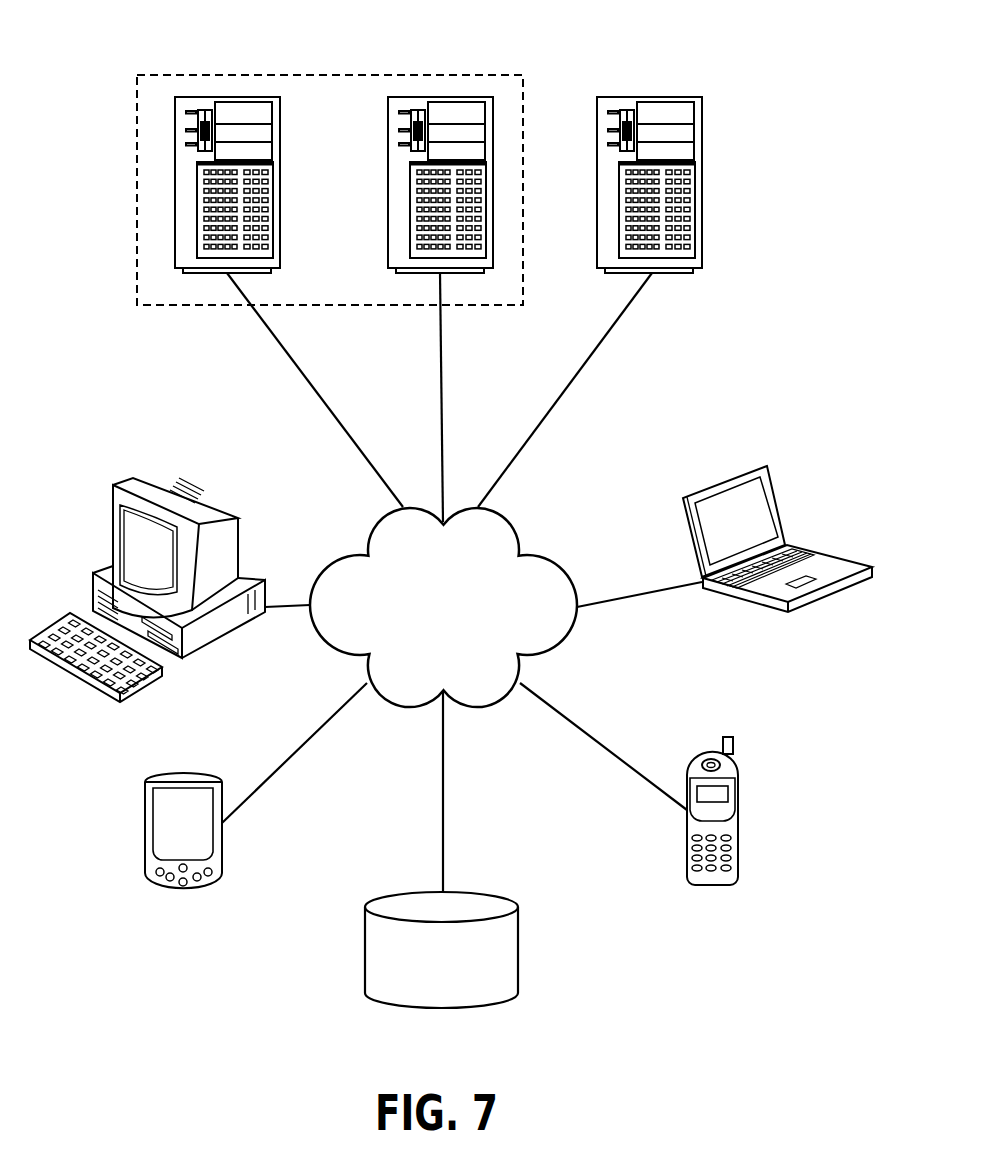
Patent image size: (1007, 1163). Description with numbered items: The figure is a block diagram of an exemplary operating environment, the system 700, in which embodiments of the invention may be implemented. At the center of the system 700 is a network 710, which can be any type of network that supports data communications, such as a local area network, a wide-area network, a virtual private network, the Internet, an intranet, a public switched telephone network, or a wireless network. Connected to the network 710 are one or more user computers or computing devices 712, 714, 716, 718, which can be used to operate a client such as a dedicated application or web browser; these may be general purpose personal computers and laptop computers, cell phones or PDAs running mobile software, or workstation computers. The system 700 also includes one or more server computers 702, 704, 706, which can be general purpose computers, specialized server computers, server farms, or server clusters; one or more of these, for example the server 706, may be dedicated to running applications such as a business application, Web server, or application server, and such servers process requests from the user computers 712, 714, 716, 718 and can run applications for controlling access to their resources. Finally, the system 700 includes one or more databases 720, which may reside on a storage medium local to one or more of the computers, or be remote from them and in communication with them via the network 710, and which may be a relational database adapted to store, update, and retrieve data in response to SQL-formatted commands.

The system 700 is at (786, 116).
The server computer 702 is at (210, 97).
The server computer 704 is at (453, 97).
The server computer 706 is at (702, 180).
The network 710 is at (467, 636).
The user computer 712 is at (160, 485).
The user computer 714 is at (735, 470).
The user computer 716 is at (711, 886).
The user computer 718 is at (183, 888).
The database 720 is at (462, 988).